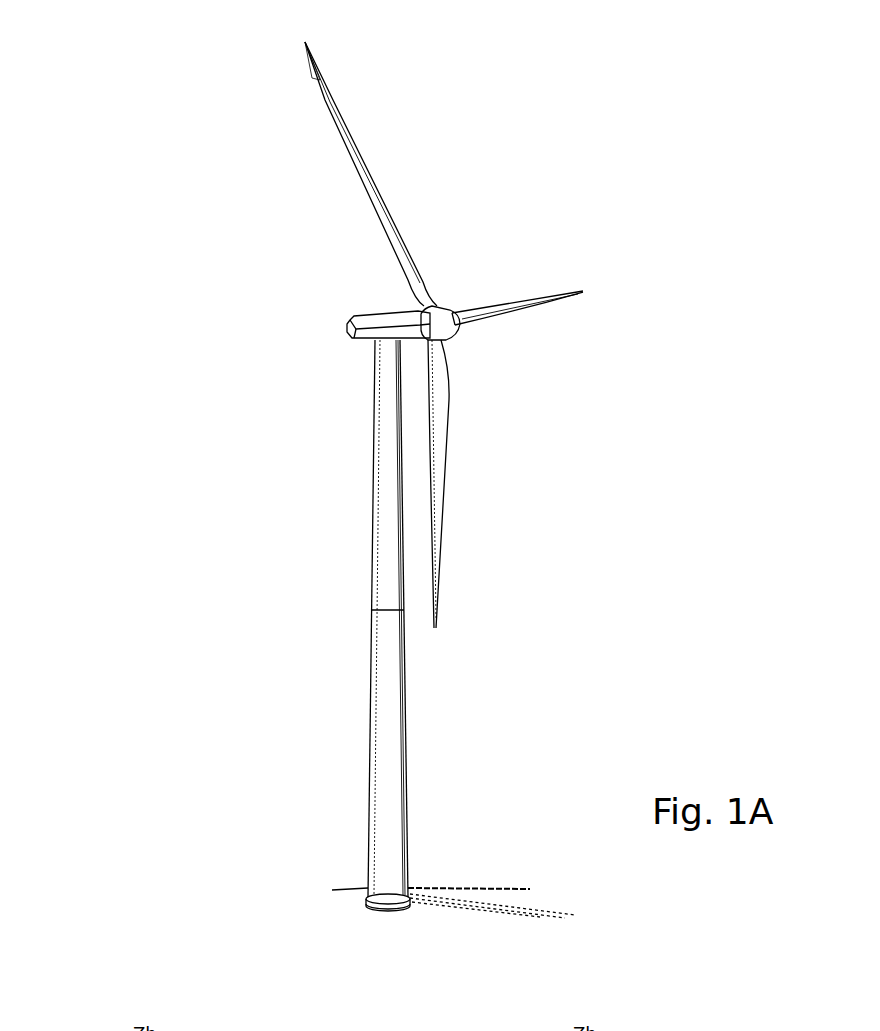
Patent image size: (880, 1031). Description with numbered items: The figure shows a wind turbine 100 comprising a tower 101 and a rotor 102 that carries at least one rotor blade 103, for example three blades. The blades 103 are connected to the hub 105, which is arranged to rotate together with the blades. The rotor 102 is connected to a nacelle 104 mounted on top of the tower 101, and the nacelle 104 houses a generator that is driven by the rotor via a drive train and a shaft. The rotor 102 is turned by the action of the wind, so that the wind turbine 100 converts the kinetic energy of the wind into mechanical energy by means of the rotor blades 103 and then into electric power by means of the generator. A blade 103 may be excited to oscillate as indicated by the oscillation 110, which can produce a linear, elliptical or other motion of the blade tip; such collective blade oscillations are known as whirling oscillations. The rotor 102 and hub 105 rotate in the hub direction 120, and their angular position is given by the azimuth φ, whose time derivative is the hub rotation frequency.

The wind turbine 100 is at (232, 135).
The tower 101 is at (364, 610).
The rotor 102 is at (425, 232).
The rotor blade 103 is at (358, 118).
The nacelle 104 is at (348, 341).
The hub 105 is at (452, 340).
The oscillation 110 is at (272, 60).
The hub direction 120 is at (538, 560).